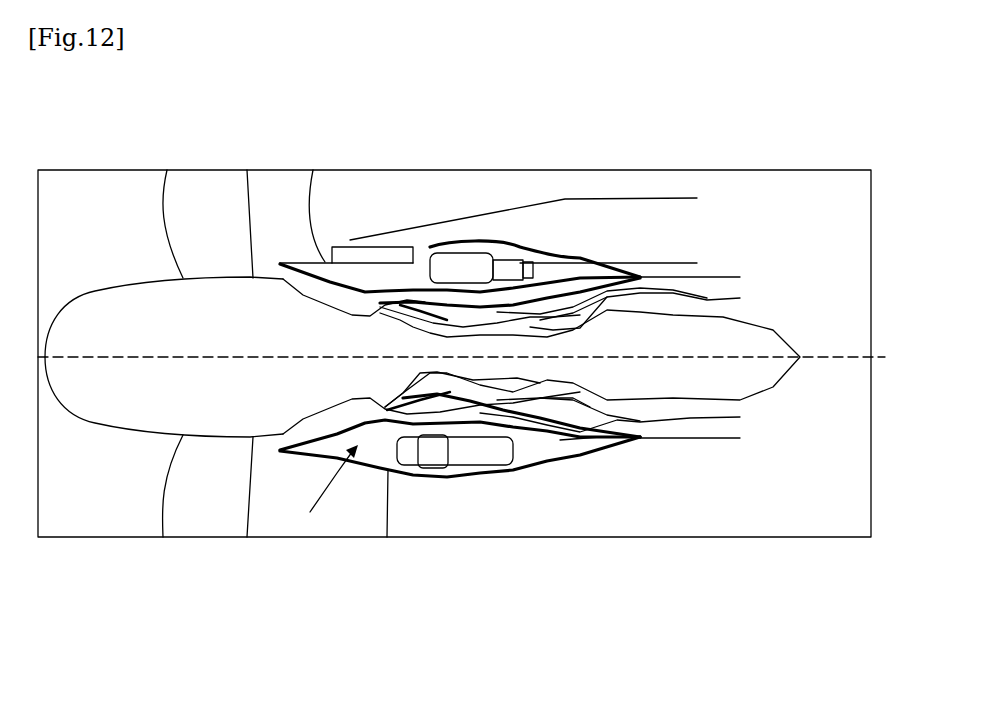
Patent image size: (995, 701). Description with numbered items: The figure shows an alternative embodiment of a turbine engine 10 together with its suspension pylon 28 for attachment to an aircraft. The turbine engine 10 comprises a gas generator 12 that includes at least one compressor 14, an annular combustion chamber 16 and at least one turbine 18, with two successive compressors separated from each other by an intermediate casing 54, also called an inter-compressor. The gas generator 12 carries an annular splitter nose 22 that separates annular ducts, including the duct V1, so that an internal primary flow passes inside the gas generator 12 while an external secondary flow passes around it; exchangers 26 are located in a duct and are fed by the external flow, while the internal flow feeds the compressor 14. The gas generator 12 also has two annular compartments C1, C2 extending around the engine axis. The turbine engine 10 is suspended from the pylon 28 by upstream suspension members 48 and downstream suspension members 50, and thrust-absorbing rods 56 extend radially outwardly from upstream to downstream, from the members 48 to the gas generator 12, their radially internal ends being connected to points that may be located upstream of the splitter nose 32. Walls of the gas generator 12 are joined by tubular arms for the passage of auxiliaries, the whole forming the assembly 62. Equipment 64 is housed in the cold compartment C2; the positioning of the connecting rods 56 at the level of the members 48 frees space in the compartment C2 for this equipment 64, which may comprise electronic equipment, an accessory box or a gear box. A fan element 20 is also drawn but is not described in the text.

The turbine engine 10 is at (158, 147).
The gas generator 12 is at (328, 450).
The compressor 14 is at (430, 375).
The annular combustion chamber 16 is at (570, 403).
The turbine 18 is at (575, 378).
The fan blade 20 is at (167, 238).
The annular splitter nose 22 is at (278, 262).
The exchangers 26 is at (507, 307).
The pylon 28 is at (562, 206).
The splitter nose 32 is at (382, 308).
The upstream suspension members 48 is at (342, 262).
The downstream suspension members 50 is at (533, 265).
The intermediate casing 54 is at (418, 272).
The thrust-absorbing rods 56 is at (380, 290).
The assembly 62 is at (540, 265).
The equipment 64 is at (500, 252).
The annular compartment C1 is at (580, 405).
The cold compartment C2 is at (480, 285).
The annular duct V1 is at (303, 283).